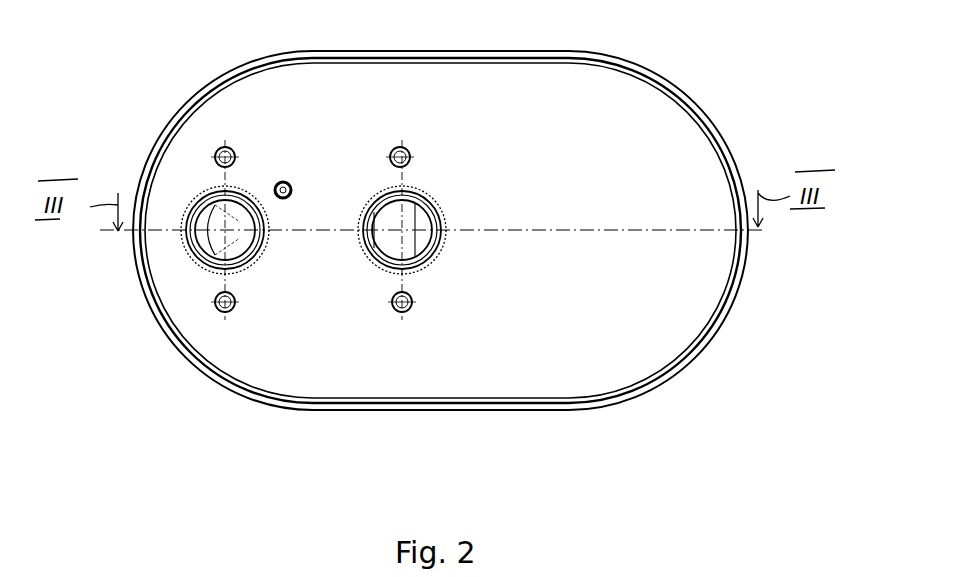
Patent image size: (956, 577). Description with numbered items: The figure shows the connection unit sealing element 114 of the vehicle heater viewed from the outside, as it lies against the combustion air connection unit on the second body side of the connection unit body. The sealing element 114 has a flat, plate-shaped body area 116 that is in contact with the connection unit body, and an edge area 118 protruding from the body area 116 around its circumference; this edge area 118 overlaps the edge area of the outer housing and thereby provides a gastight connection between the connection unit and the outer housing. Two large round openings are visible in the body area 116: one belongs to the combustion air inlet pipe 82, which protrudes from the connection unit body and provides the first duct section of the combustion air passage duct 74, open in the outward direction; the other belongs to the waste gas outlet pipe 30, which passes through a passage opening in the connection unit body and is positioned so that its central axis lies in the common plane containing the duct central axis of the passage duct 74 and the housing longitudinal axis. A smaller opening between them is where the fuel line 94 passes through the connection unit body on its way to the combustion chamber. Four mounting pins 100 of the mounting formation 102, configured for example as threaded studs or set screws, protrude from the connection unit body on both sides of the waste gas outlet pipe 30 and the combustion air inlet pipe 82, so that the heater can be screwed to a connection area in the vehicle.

The waste gas outlet pipe 30 is at (435, 233).
The combustion air passage duct 74 is at (200, 195).
The combustion air inlet pipe 82 is at (200, 270).
The fuel line 94 is at (281, 182).
The mounting pins 100 is at (216, 153).
The mounting formation 102 is at (384, 356).
The connection unit sealing element 114 is at (276, 411).
The plate-shaped body area 116 is at (652, 345).
The edge area 118 is at (732, 313).